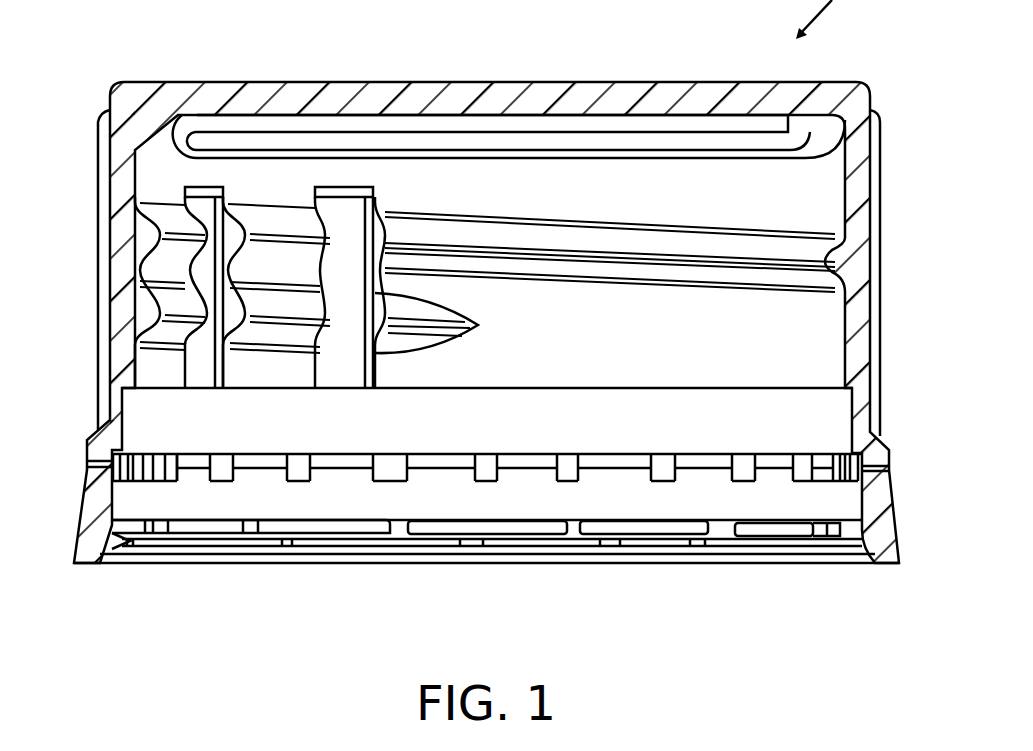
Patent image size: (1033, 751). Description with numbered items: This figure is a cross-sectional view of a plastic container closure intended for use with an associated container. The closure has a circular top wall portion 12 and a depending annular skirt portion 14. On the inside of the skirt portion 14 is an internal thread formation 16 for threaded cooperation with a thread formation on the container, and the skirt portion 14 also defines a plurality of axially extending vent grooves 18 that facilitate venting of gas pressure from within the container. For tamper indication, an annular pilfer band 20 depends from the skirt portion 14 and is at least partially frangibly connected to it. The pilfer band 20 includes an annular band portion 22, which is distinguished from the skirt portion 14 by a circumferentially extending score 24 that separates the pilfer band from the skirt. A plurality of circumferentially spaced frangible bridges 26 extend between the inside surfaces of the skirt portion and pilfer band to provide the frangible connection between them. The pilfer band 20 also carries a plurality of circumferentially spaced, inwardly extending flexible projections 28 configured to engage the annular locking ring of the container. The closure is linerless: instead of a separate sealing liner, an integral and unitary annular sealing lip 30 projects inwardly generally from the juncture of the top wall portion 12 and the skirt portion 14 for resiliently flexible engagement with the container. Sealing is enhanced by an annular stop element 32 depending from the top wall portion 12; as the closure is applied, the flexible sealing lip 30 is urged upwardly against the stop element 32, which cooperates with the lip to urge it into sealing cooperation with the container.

The top wall portion 12 is at (312, 80).
The skirt portion 14 is at (882, 222).
The internal thread formation 16 is at (556, 268).
The vent grooves 18 is at (378, 212).
The pilfer band 20 is at (70, 511).
The annular band portion 22 is at (890, 530).
The score 24 is at (432, 468).
The frangible bridges 26 is at (316, 454).
The flexible projections 28 is at (187, 533).
The annular sealing lip 30 is at (735, 158).
The annular stop element 32 is at (640, 128).